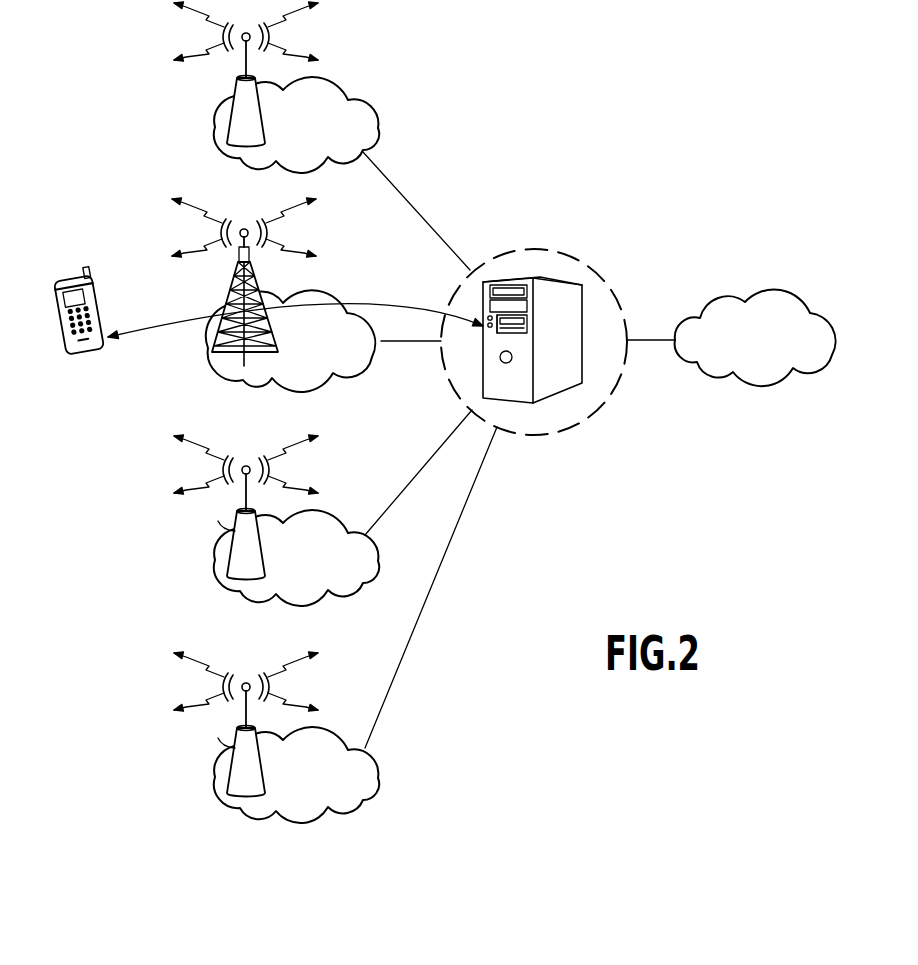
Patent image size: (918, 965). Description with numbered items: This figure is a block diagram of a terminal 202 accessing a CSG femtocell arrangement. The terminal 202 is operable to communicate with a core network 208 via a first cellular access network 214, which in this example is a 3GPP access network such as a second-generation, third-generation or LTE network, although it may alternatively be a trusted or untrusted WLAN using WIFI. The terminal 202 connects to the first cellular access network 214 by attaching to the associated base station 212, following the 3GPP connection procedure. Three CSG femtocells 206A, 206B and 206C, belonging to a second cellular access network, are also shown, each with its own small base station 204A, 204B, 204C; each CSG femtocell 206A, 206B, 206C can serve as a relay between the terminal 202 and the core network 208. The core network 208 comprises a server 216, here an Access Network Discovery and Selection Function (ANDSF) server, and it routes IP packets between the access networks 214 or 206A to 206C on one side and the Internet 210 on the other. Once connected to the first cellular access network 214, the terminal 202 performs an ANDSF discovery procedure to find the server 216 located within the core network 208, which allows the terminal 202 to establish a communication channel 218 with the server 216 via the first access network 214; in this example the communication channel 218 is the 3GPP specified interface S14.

The terminal 202 is at (82, 355).
The base station / access point 204A is at (235, 98).
The base station / access point 204B is at (246, 507).
The base station / access point 204C is at (246, 724).
The CSG femtocell 206A is at (318, 140).
The CSG femtocell 206B is at (303, 583).
The CSG femtocell 206C is at (303, 800).
The core network 208 is at (528, 249).
The Internet 210 is at (741, 310).
The base station 212 is at (232, 278).
The first cellular access network 214 is at (303, 367).
The server 216 is at (545, 377).
The communication channel 218 is at (295, 312).